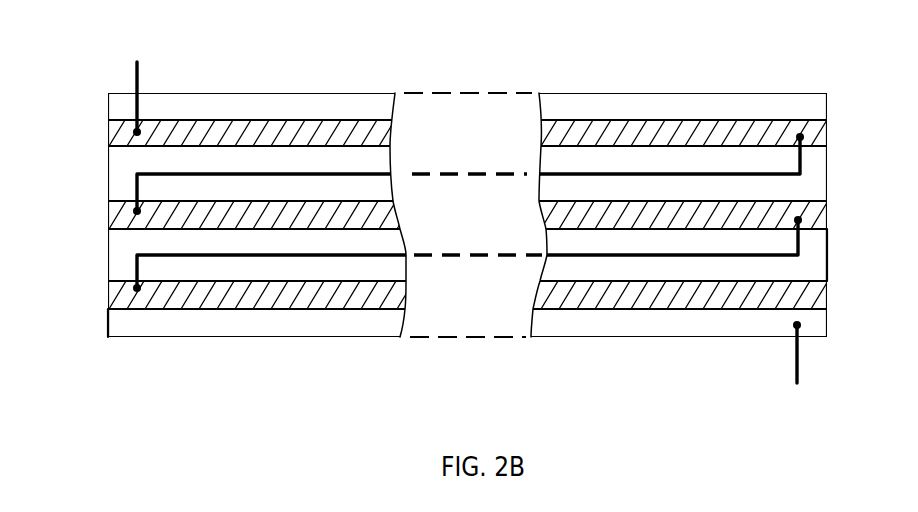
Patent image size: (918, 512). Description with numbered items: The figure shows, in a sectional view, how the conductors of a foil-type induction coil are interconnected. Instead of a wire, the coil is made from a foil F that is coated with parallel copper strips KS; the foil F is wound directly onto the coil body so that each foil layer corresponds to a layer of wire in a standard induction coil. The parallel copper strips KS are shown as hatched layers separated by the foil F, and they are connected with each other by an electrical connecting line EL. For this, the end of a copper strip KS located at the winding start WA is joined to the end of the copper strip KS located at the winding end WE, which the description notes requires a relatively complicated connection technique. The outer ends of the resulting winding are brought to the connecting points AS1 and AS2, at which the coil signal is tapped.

The connecting point AS1 is at (137, 62).
The connecting point AS2 is at (795, 367).
The electrical connecting line EL is at (527, 174).
The foil F is at (810, 187).
The copper strips KS is at (117, 128).
The winding end WE is at (827, 262).
The winding start WA is at (108, 317).